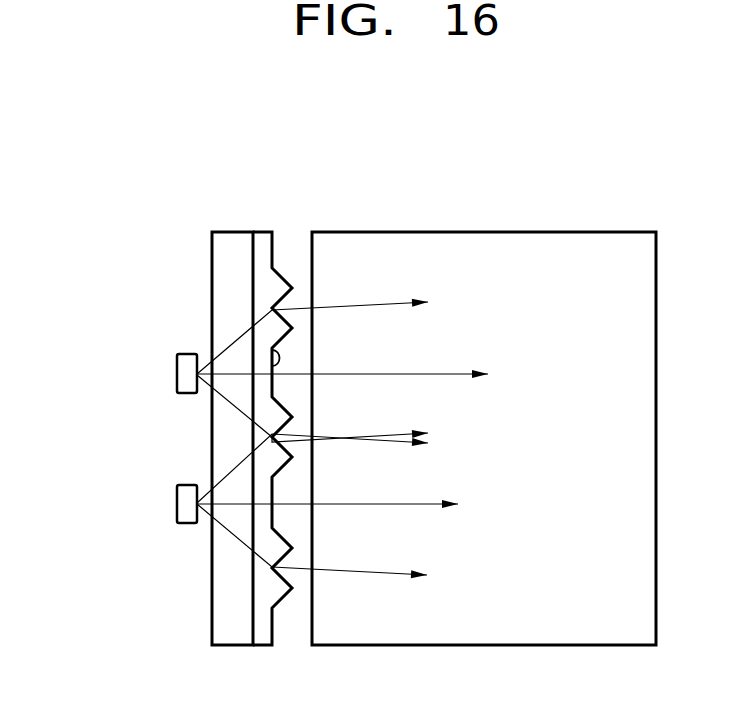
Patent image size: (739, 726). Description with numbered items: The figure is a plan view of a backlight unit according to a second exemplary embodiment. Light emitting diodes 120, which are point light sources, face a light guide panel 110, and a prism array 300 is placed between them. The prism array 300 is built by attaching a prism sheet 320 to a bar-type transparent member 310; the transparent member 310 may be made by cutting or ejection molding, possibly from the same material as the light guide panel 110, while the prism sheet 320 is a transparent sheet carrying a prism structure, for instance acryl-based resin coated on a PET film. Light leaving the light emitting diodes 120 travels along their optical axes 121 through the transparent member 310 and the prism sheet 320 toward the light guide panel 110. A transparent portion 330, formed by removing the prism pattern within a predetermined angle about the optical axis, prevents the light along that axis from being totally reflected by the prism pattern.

The light guide panel 110 is at (543, 228).
The light emitting diodes 120 is at (177, 503).
The optical axes 121 is at (398, 505).
The prism array 300 is at (253, 374).
The transparent member 310 is at (222, 232).
The prism sheet 320 is at (277, 232).
The transparent portion 330 is at (270, 349).